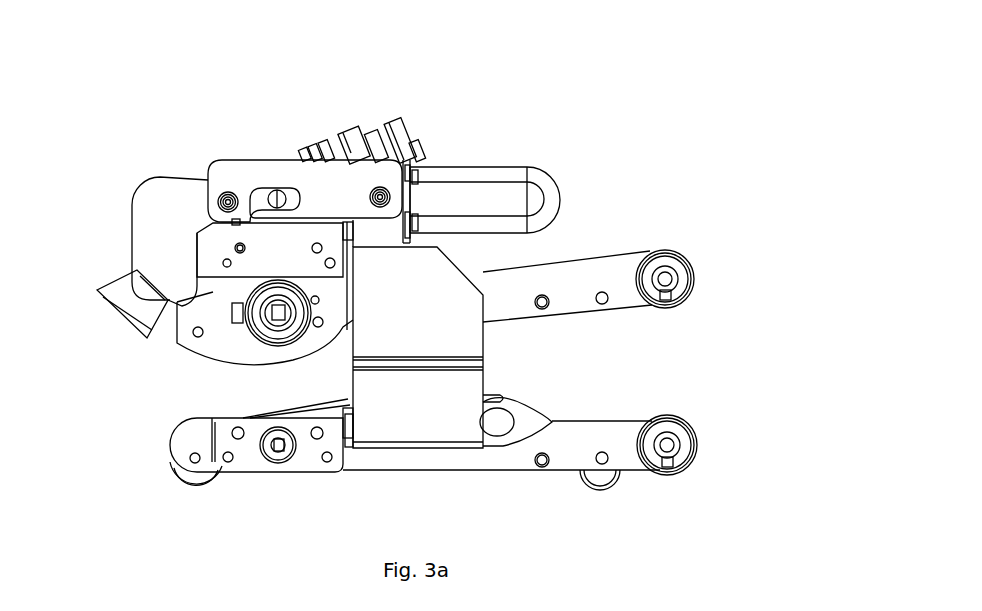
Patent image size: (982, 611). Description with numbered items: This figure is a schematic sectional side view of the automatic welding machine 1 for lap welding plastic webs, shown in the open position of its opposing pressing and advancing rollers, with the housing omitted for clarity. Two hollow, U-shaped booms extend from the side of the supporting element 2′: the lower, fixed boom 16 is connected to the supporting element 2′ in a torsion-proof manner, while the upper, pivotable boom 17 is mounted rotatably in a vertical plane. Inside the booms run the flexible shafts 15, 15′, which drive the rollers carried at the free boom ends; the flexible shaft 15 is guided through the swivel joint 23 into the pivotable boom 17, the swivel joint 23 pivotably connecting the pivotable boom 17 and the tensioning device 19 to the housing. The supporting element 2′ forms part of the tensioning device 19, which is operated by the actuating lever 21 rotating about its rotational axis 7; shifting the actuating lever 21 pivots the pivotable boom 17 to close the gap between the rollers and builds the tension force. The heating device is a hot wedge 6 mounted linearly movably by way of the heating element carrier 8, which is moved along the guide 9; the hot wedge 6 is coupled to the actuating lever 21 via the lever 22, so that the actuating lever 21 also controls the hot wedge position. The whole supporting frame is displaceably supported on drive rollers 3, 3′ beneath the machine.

The automatic welding machine 1 is at (680, 141).
The tensioning device 19 is at (285, 141).
The lever 22 is at (325, 186).
The rotational axis of the actuating lever 7 is at (277, 200).
The guide 9 is at (470, 176).
The heating element carrier 8 is at (392, 280).
The actuating lever 21 is at (180, 254).
The supporting element 2′ is at (262, 255).
The swivel joint 23 is at (262, 288).
The flexible shaft 15 is at (272, 315).
The pivotable boom 17 is at (557, 278).
The flexible shaft 15′ is at (278, 445).
The drive roller 3 is at (180, 477).
The drive roller 3′ is at (585, 476).
The hot wedge 6 is at (525, 423).
The fixed boom 16 is at (568, 450).